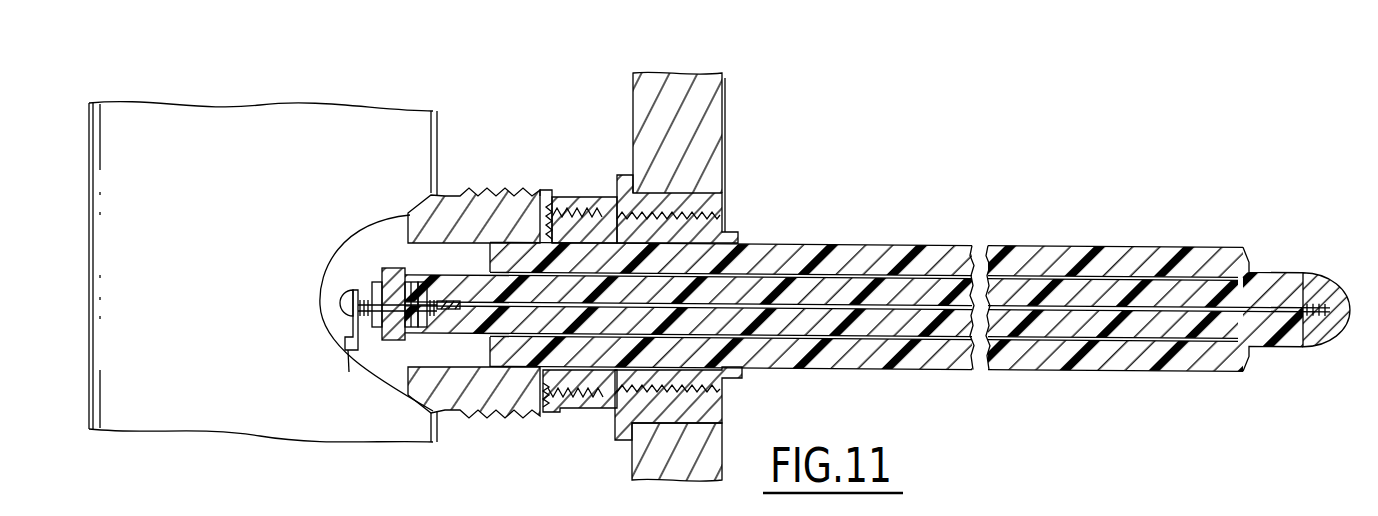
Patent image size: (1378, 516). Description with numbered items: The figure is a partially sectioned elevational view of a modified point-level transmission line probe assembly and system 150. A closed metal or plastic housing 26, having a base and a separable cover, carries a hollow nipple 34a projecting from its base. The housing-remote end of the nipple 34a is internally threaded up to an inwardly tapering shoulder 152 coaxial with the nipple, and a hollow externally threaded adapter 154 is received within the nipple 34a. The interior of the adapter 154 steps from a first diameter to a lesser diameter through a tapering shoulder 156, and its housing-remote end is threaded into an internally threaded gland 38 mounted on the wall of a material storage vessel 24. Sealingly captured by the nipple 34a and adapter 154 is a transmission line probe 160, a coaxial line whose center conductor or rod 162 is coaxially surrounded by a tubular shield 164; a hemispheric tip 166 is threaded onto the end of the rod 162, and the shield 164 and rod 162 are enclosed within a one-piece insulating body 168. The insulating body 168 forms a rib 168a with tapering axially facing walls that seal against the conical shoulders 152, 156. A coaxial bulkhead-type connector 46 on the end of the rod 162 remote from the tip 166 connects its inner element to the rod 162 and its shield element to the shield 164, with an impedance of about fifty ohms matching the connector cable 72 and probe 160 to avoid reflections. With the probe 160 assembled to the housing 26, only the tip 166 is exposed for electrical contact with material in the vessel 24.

The material storage vessel 24 is at (717, 81).
The housing 26 is at (437, 103).
The nipple 34a is at (480, 193).
The gland 38 is at (710, 192).
The coaxial bulkhead-type connector 46 is at (360, 368).
The connector cable 72 is at (343, 333).
The point-level transmission line probe assembly and system 150 is at (872, 93).
The inwardly tapering shoulder 152 is at (553, 237).
The adapter 154 is at (700, 231).
The tapering shoulder 156 is at (582, 240).
The transmission line probe 160 is at (1038, 240).
The center conductor or rod 162 is at (1172, 298).
The tubular shield 164 is at (856, 248).
The hemispheric tip 166 is at (1324, 266).
The insulating body 168 is at (1133, 360).
The rib 168a is at (575, 362).